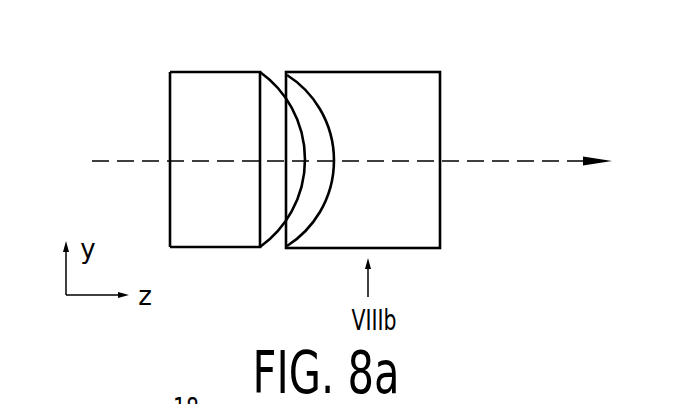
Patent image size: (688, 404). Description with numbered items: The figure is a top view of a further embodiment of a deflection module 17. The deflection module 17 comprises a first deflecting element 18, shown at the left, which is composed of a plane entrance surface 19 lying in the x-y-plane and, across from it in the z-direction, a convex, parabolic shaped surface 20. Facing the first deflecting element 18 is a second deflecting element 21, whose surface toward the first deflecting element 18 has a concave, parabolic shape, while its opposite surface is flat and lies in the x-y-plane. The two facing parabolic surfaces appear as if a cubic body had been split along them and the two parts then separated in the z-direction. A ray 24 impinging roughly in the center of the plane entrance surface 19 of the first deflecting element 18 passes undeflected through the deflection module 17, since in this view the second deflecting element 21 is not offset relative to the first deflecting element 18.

The deflection module 17 is at (459, 81).
The first deflecting element 18 is at (194, 66).
The plane entrance surface 19 is at (170, 115).
The convex, parabolic shaped surface 20 is at (268, 242).
The second deflecting element 21 is at (380, 66).
The ray 24 is at (541, 161).